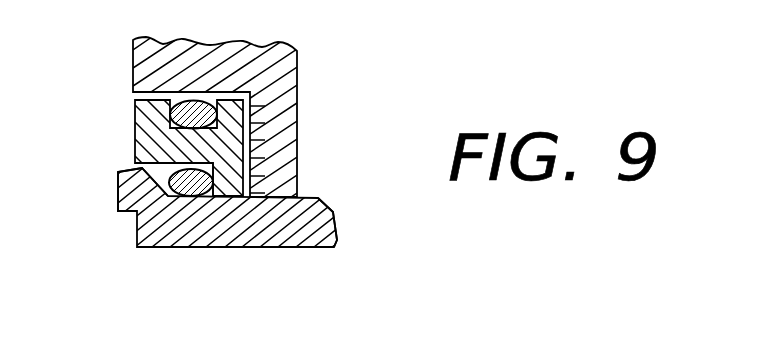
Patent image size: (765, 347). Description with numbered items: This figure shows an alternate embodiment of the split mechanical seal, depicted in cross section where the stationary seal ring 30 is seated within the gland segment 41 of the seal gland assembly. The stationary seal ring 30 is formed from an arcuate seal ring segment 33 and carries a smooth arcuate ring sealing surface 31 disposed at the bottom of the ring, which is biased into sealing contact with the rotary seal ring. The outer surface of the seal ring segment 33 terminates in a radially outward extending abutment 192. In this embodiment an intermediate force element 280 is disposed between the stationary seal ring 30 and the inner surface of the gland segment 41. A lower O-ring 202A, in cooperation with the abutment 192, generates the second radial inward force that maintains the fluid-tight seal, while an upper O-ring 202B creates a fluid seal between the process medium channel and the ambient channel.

The stationary seal ring 30 is at (318, 247).
The arcuate ring sealing surface 31 is at (118, 189).
The arcuate seal ring segment 33 is at (338, 215).
The gland segment 41 is at (298, 83).
The abutment 192 is at (133, 148).
The O-ring 202A is at (213, 185).
The O-ring 202B is at (178, 100).
The intermediate force element 280 is at (133, 121).